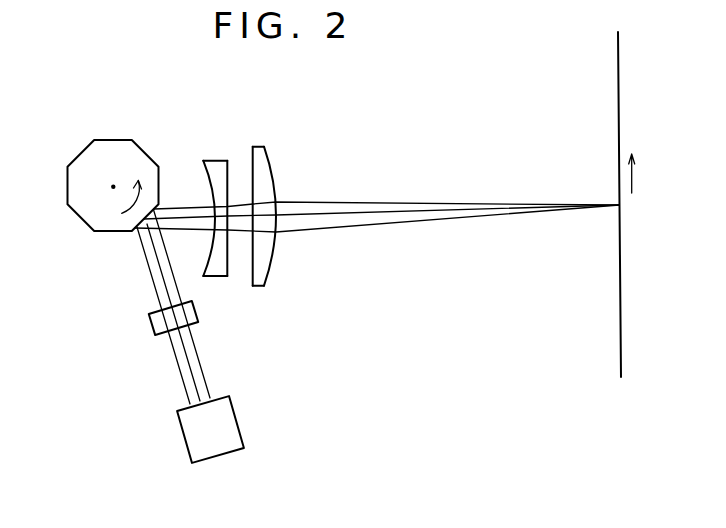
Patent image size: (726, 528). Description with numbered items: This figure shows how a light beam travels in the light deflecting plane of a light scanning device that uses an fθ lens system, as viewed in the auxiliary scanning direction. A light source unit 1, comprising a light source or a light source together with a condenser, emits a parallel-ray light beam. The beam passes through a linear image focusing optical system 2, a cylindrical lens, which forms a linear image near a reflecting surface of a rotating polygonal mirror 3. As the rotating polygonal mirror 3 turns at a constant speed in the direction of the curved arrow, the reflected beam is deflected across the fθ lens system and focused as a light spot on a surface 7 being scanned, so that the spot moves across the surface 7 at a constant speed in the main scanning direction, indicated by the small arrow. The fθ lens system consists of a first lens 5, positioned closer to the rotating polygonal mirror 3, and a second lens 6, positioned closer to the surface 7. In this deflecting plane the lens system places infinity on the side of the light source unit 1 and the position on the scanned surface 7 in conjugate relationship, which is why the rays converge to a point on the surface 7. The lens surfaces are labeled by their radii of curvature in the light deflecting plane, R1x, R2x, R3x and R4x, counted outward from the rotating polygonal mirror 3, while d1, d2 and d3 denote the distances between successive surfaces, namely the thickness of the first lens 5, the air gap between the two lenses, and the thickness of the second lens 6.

The light source unit 1 is at (227, 415).
The linear image focusing optical system 2 is at (192, 315).
The rotating polygonal mirror 3 is at (134, 145).
The first lens 5 is at (208, 206).
The second lens 6 is at (297, 199).
The surface being scanned 7 is at (618, 90).
The radius of curvature of first surface in the light deflecting plane R1x is at (213, 197).
The radius of curvature of second surface in the light deflecting plane R2x is at (232, 262).
The radius of curvature of third surface in the light deflecting plane R3x is at (255, 260).
The radius of curvature of fourth surface in the light deflecting plane R4x is at (275, 181).
The first surface distance d1 is at (220, 236).
The second surface distance d2 is at (240, 217).
The third surface distance d3 is at (265, 218).